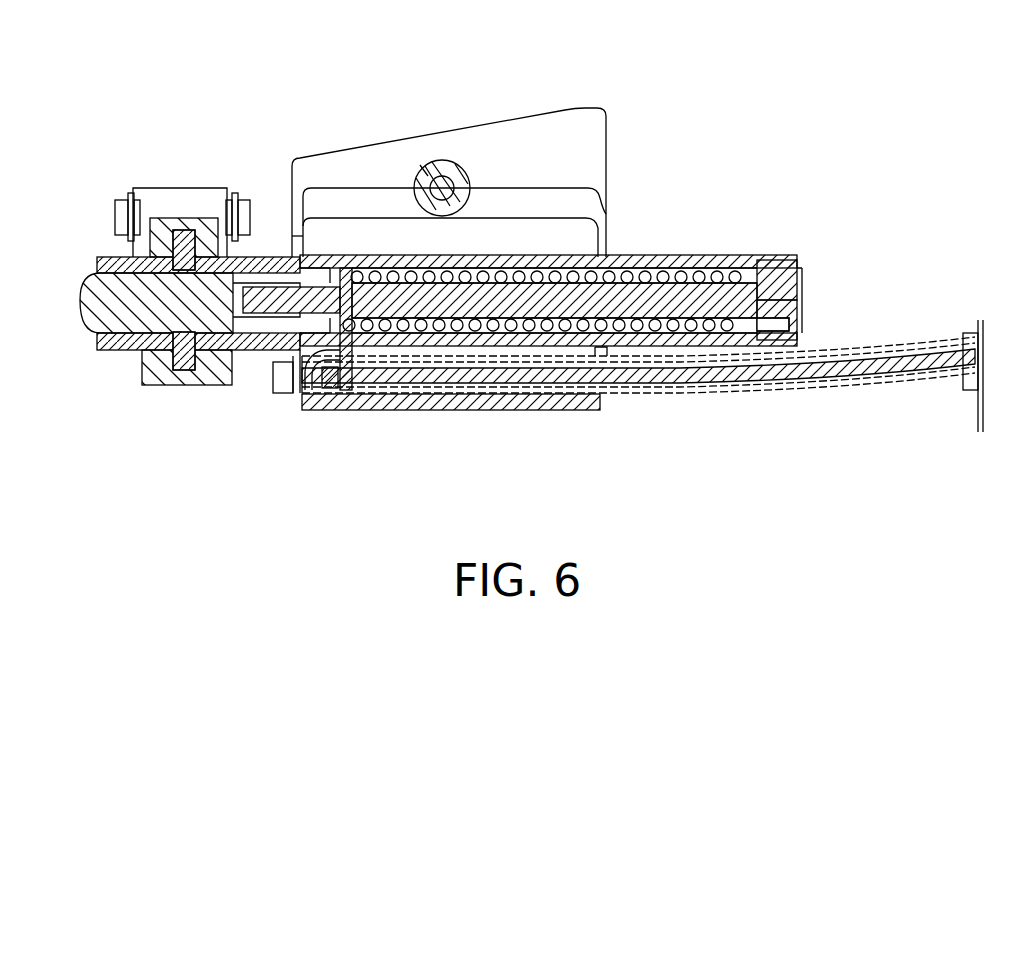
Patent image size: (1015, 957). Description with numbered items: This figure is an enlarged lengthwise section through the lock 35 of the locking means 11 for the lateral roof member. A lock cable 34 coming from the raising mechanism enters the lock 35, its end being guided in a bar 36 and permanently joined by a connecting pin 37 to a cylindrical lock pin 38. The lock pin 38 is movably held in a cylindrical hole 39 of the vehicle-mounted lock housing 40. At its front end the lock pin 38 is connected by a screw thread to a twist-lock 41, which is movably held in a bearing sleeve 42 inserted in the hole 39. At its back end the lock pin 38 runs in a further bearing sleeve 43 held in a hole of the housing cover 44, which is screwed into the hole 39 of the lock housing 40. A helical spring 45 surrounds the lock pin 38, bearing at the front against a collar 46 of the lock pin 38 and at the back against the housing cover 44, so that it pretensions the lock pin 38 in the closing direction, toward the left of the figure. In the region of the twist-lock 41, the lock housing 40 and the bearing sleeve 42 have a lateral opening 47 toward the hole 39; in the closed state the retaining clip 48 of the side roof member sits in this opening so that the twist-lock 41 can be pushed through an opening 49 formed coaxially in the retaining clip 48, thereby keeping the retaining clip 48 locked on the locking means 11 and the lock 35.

The locking means 11 is at (316, 128).
The lock cable 34 is at (405, 368).
The lock 35 is at (484, 412).
The bar 36 is at (375, 412).
The connecting pin 37 is at (315, 412).
The lock pin 38 is at (545, 295).
The cylindrical hole 39 is at (678, 277).
The lock housing 40 is at (627, 262).
The twist-lock 41 is at (86, 298).
The bearing sleeve 42 is at (130, 352).
The bearing sleeve 43 is at (800, 275).
The housing cover 44 is at (792, 330).
The helical spring 45 is at (730, 275).
The collar 46 is at (350, 272).
The lateral opening 47 is at (135, 190).
The retaining clip 48 is at (178, 258).
The opening 49 is at (186, 268).